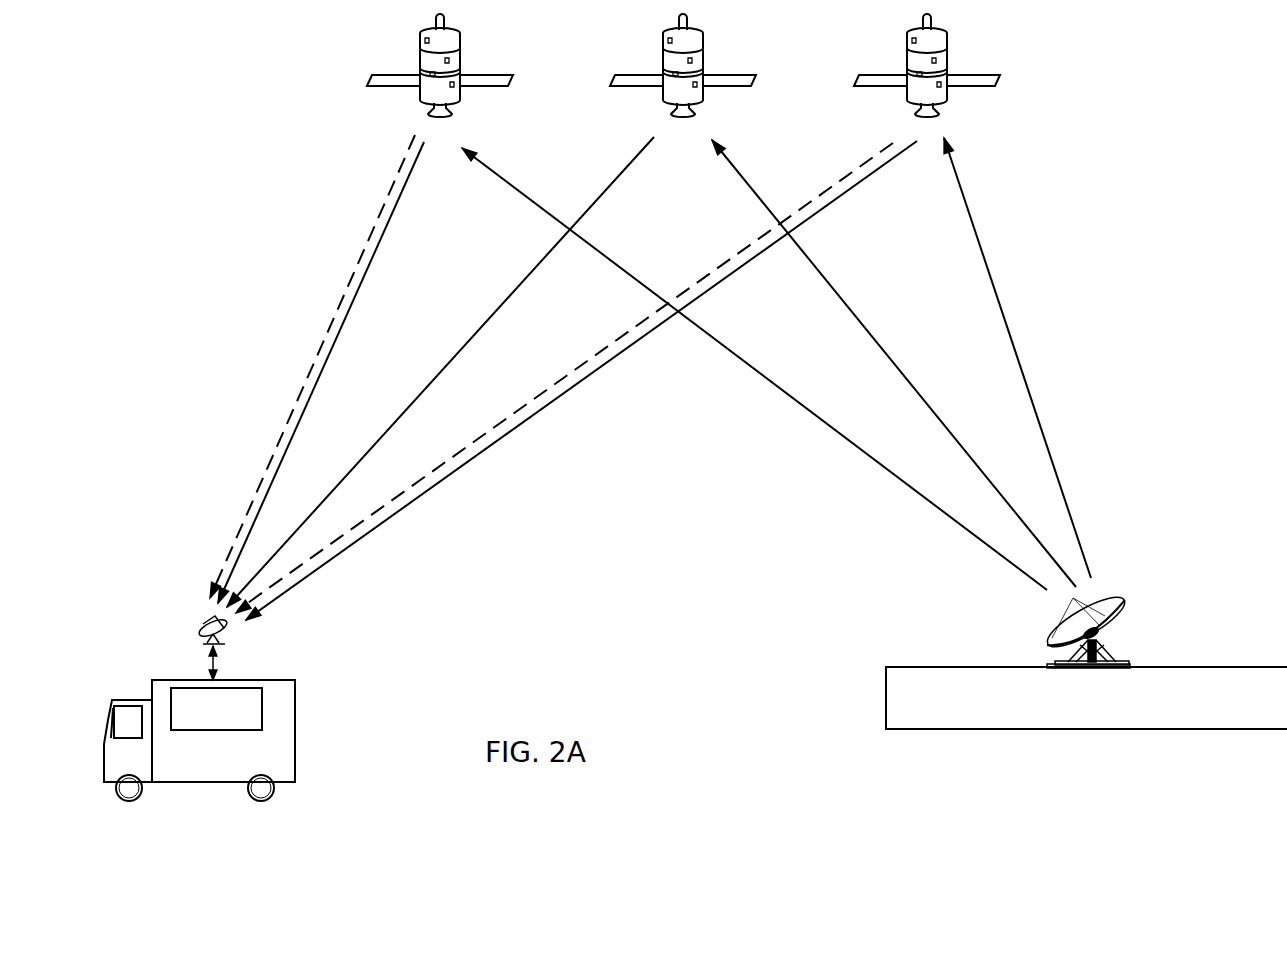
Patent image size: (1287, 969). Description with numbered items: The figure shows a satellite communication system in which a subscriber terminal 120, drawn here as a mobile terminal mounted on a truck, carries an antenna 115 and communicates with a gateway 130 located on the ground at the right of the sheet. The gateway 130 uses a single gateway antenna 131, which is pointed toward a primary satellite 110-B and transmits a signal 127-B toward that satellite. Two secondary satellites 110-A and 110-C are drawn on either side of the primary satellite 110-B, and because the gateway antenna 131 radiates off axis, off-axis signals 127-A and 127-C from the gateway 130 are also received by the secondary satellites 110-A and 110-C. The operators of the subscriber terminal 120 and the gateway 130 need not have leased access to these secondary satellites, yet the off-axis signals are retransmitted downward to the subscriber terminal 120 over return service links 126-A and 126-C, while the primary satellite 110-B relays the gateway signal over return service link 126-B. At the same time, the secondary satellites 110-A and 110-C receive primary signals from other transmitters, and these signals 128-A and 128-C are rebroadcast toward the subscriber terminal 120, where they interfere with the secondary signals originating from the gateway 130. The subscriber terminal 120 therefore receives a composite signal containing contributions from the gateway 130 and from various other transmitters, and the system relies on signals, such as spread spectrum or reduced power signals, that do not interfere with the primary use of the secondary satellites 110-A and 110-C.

The secondary satellite 110-A is at (428, 62).
The primary satellite 110-B is at (671, 62).
The secondary satellite 110-C is at (915, 62).
The antenna 115 is at (207, 626).
The subscriber terminal 120 is at (199, 740).
The return service link 126-A is at (303, 418).
The return service link 126-B is at (417, 398).
The return service link 126-C is at (497, 440).
The off-axis signal 127-A is at (792, 397).
The signal toward primary satellite 127-B is at (878, 342).
The off-axis signal 127-C is at (1010, 330).
The primary signal retransmitted from secondary satellite 128-A is at (321, 352).
The primary signal retransmitted from secondary satellite 128-C is at (498, 428).
The gateway 130 is at (1086, 698).
The gateway antenna 131 is at (1057, 638).